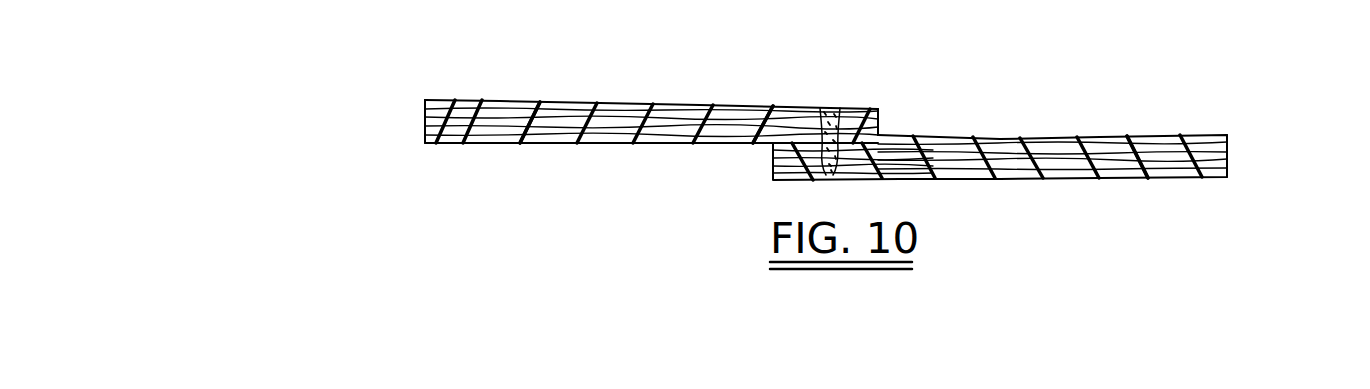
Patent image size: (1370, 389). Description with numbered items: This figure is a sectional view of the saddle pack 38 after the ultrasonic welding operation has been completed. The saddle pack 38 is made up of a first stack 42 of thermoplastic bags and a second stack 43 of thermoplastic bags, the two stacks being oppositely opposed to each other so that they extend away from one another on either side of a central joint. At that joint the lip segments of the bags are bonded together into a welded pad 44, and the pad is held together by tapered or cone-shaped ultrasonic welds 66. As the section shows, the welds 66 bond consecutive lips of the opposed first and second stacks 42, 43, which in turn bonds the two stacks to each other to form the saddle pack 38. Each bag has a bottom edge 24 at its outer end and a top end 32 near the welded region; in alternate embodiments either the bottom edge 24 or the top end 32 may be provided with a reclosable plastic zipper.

The saddle pack 38 is at (480, 30).
The bottom edge 24 is at (425, 103).
The second stack 43 is at (548, 100).
The top end 32 is at (777, 102).
The ultrasonic weld 66 is at (832, 108).
The welded pad of lip segments 44 is at (880, 132).
The first stack 42 is at (1120, 148).